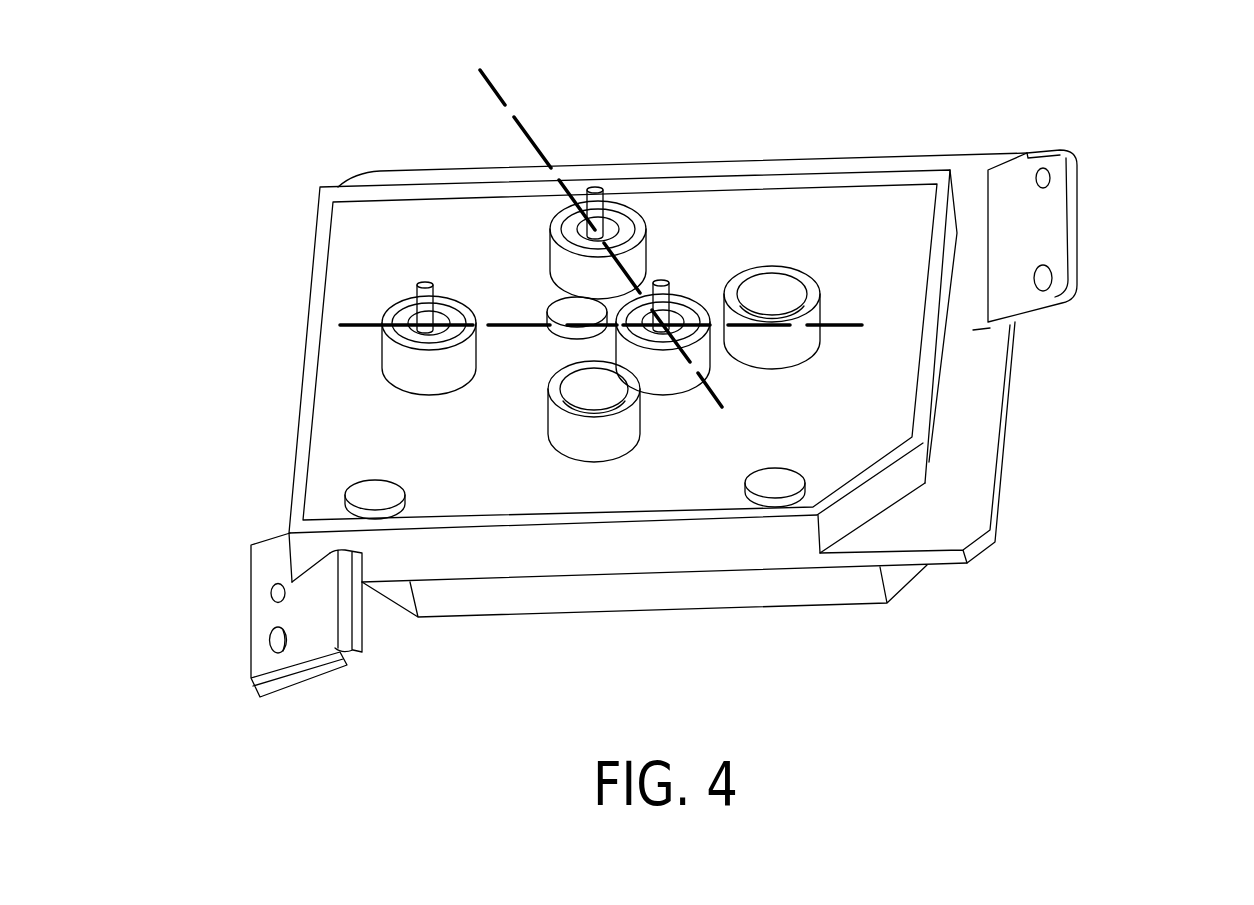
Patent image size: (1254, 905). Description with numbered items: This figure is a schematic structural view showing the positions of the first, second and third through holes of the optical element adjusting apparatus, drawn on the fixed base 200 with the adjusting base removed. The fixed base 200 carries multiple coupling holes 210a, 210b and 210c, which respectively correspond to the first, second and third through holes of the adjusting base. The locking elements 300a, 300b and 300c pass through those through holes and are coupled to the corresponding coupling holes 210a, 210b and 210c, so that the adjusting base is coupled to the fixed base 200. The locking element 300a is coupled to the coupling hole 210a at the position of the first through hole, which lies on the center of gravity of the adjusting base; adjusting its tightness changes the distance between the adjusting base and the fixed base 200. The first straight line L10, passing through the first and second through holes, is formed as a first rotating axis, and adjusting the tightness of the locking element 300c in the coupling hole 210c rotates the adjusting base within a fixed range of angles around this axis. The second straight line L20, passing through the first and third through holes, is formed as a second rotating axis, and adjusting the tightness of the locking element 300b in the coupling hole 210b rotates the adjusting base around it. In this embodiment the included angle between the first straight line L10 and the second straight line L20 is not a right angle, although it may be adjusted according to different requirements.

The fixed base 200 is at (1018, 230).
The coupling hole 210a is at (694, 298).
The coupling hole 210b is at (627, 204).
The coupling hole 210c is at (383, 307).
The locking element 300a is at (723, 217).
The locking element 300b is at (610, 172).
The locking element 300c is at (305, 233).
The first straight line L10 is at (517, 116).
The second straight line L20 is at (383, 326).